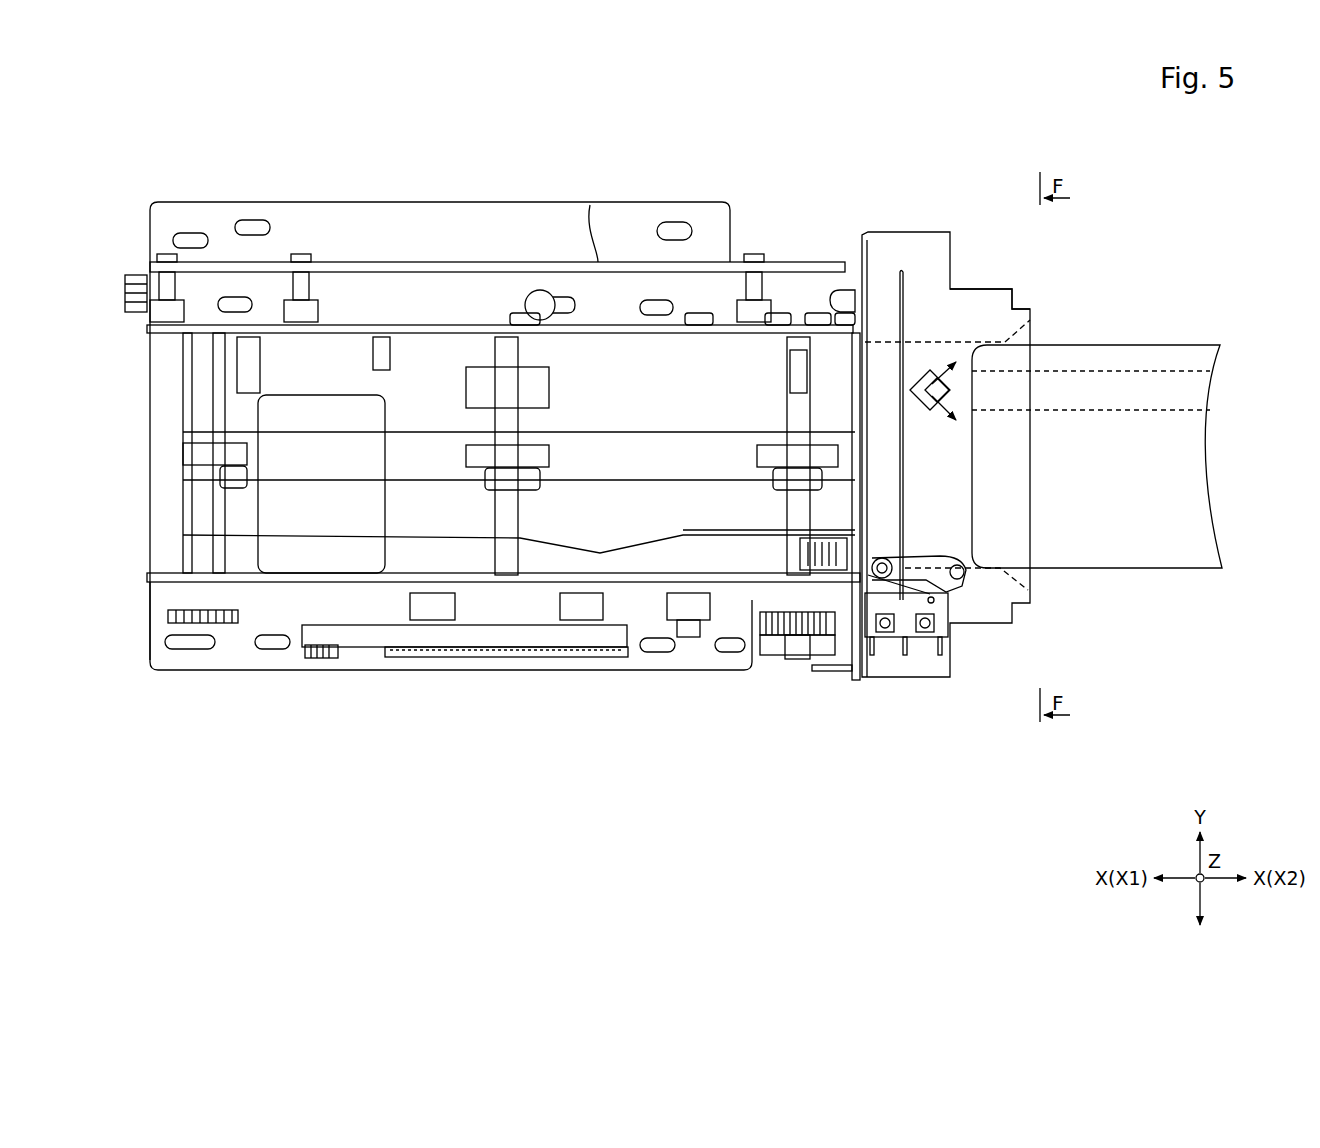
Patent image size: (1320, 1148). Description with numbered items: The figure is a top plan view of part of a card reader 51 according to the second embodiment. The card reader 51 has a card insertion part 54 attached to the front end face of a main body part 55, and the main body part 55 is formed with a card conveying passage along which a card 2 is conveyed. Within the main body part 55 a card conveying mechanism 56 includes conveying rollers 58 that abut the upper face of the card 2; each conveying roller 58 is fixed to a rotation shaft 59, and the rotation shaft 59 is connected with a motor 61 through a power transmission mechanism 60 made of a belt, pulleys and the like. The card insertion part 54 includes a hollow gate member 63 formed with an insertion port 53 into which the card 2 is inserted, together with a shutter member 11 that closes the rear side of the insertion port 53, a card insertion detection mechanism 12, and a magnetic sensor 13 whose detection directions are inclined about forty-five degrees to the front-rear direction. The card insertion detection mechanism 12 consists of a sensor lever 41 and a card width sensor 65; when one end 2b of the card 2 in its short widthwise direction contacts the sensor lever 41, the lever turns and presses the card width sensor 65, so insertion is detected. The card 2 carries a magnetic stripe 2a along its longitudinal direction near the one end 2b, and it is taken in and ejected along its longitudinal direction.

The card 2 is at (1122, 570).
The magnetic stripe 2a is at (1100, 412).
The one end 2b is at (1138, 345).
The shutter member 11 is at (903, 527).
The card insertion detection mechanism 12 is at (903, 714).
The magnetic sensor 13 is at (912, 405).
The sensor lever 41 is at (965, 625).
The card reader 51 is at (975, 182).
The insertion port 53 is at (1030, 583).
The card insertion part 54 is at (906, 230).
The main body part 55 is at (600, 258).
The card conveying mechanism 56 is at (347, 712).
The conveying rollers 58 is at (247, 450).
The rotation shaft 59 is at (222, 510).
The power transmission mechanism 60 is at (541, 672).
The motor 61 is at (388, 512).
The gate member 63 is at (980, 290).
The card width sensor 65 is at (908, 648).